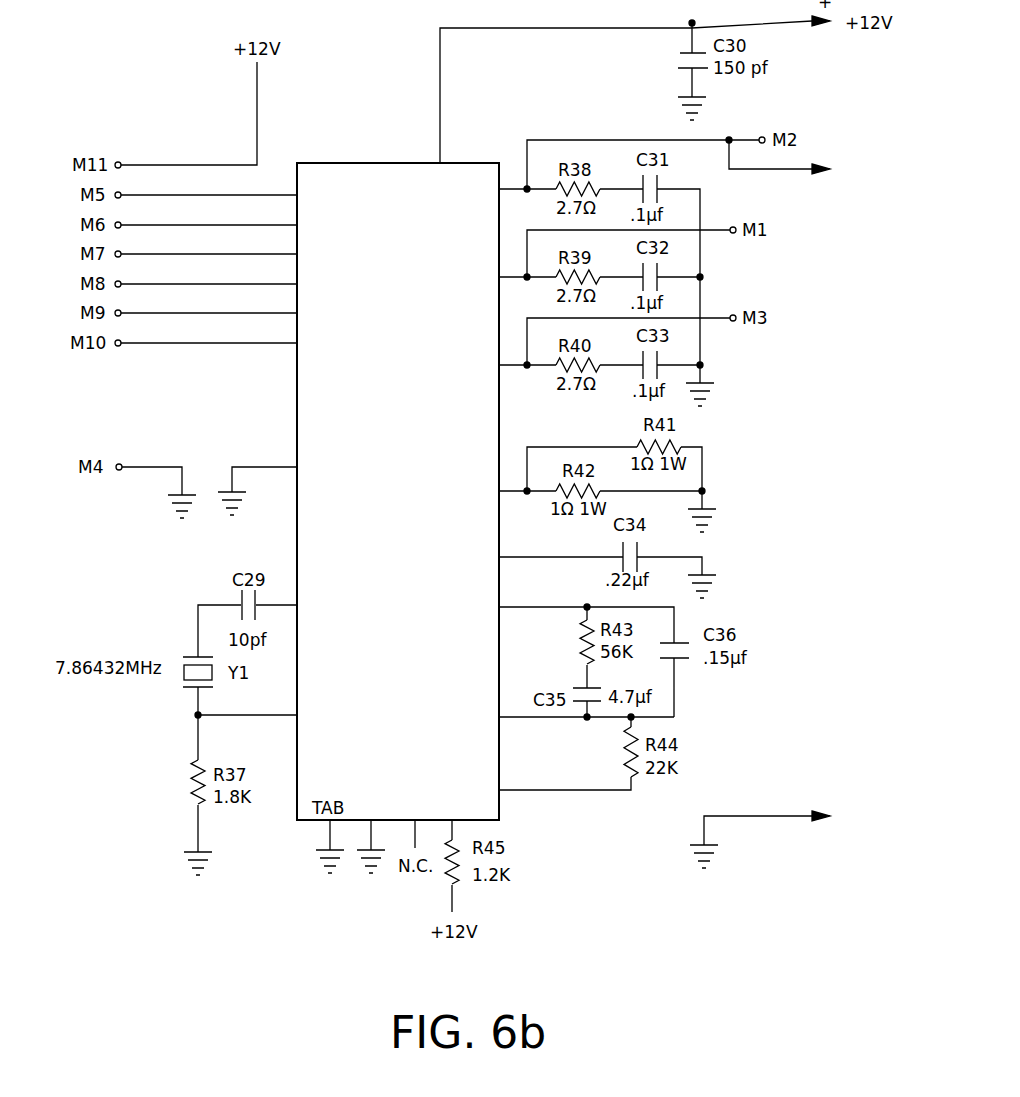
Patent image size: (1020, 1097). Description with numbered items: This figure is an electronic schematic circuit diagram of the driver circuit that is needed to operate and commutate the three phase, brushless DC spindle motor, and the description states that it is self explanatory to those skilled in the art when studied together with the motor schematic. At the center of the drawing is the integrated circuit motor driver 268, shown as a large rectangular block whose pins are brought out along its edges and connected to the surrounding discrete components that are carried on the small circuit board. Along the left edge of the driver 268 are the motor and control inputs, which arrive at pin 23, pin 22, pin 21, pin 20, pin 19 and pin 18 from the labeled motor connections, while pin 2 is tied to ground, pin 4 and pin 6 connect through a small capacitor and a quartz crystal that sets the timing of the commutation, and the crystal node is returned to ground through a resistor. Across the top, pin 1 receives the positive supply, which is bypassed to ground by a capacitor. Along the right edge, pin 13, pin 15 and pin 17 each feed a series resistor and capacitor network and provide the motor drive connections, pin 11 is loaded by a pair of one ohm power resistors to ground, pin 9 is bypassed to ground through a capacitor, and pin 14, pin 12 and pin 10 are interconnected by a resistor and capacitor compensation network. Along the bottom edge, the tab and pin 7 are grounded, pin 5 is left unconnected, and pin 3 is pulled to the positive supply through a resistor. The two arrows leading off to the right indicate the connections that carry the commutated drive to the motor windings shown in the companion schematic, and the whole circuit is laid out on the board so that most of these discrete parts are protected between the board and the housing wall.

The integrated circuit motor driver 268 is at (418, 525).
The pin 1 supply 1 is at (633, 102).
The output 2 / pin 2 is at (486, 329).
The output 3 / pin 3 is at (650, 855).
The pin 4 is at (263, 623).
The pin 5 is at (415, 823).
The pin 6 is at (262, 715).
The pin 7 is at (371, 835).
The pin 9 is at (597, 570).
The pin 10 is at (550, 788).
The pin 11 is at (594, 486).
The pin 12 is at (572, 742).
The pin 13 is at (617, 251).
The pin 14 is at (579, 657).
The pin 15 is at (603, 259).
The pin 17 is at (603, 360).
The pin 18 is at (223, 343).
The pin 19 is at (223, 313).
The pin 20 is at (223, 284).
The pin 21 is at (223, 254).
The pin 22 is at (223, 225).
The pin 23 is at (223, 195).